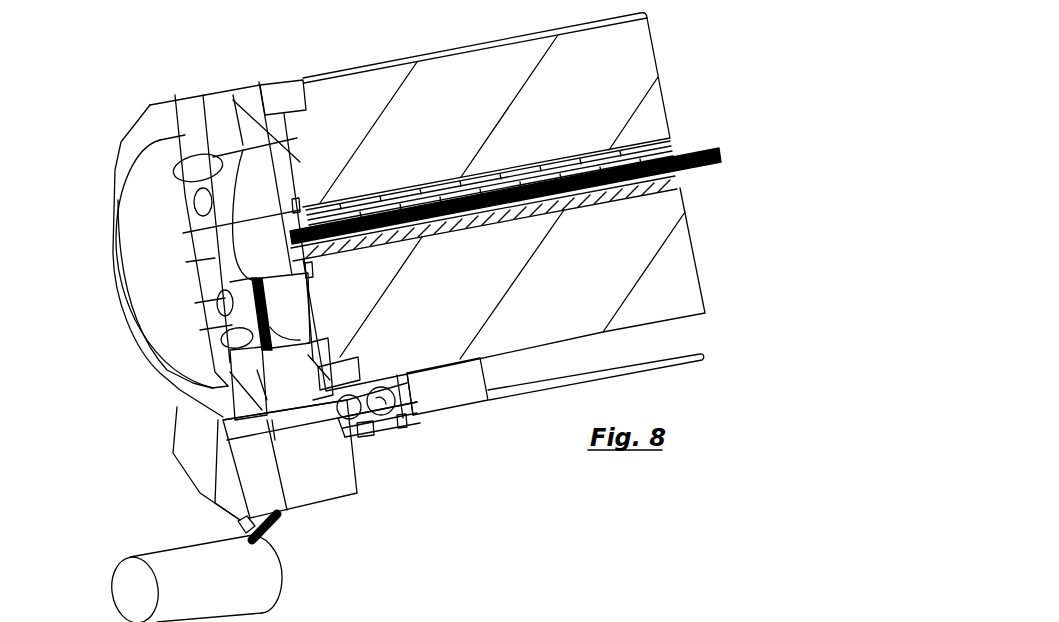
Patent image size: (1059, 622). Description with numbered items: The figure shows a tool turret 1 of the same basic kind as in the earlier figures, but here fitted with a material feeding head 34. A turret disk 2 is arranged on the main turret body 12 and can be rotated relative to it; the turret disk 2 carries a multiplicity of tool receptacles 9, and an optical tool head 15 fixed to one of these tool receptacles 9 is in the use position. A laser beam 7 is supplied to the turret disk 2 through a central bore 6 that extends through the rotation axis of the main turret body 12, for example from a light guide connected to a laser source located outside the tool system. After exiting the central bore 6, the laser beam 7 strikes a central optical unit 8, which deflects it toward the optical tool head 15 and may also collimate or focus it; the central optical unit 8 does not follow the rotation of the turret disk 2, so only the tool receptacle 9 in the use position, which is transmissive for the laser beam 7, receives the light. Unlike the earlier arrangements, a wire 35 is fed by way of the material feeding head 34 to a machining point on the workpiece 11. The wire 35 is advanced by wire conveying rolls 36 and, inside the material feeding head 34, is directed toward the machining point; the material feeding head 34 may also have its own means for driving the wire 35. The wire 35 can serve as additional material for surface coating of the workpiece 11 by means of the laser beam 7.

The tool turret 1 is at (89, 108).
The turret disk 2 is at (186, 118).
The central bore 6 is at (672, 148).
The laser beam 7 is at (695, 154).
The central optical unit 8 is at (238, 250).
The tool receptacles 9 is at (203, 171).
The workpiece 11 is at (257, 597).
The main turret body 12 is at (645, 67).
The optical tool head 15 is at (330, 480).
The material feeding head 34 is at (197, 467).
The wire 35 is at (240, 527).
The wire conveying rolls 36 is at (373, 410).